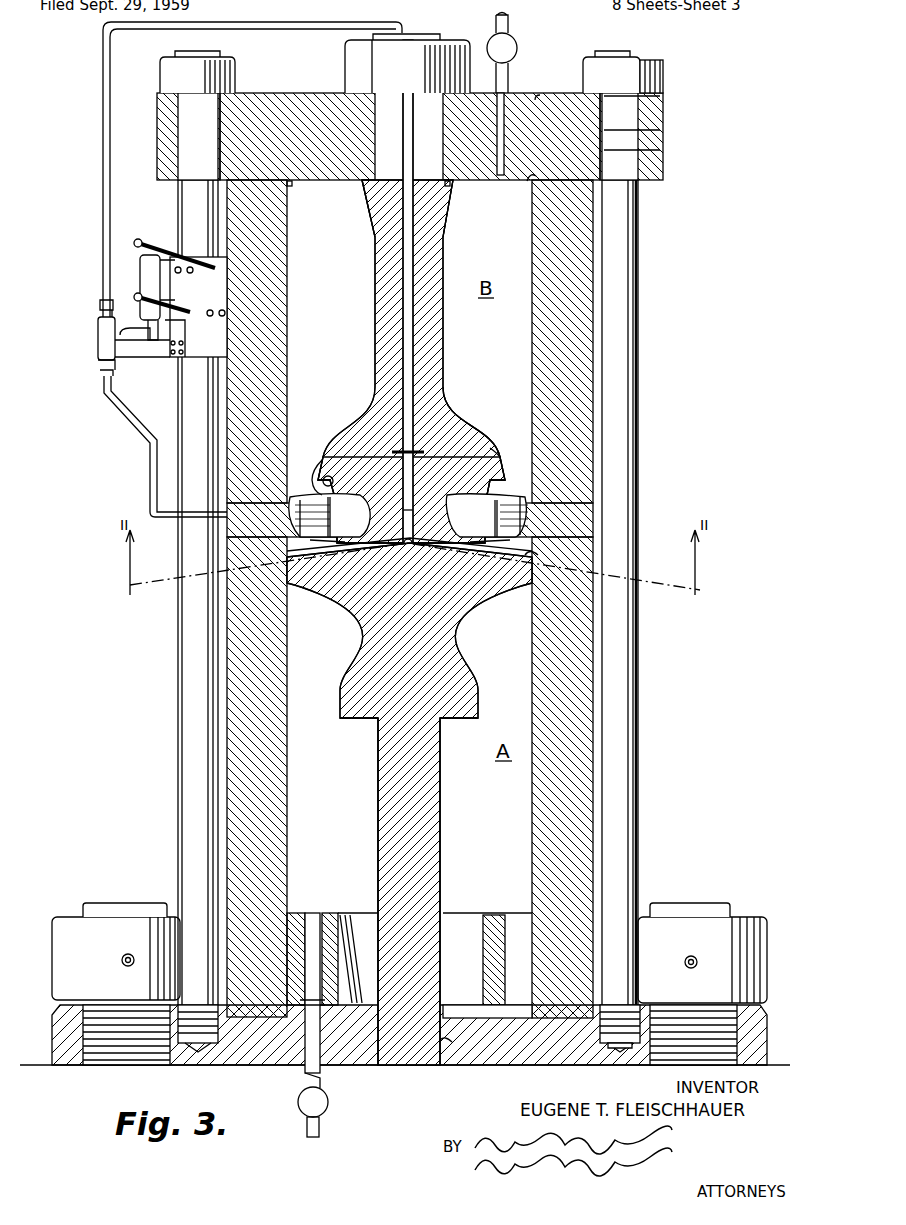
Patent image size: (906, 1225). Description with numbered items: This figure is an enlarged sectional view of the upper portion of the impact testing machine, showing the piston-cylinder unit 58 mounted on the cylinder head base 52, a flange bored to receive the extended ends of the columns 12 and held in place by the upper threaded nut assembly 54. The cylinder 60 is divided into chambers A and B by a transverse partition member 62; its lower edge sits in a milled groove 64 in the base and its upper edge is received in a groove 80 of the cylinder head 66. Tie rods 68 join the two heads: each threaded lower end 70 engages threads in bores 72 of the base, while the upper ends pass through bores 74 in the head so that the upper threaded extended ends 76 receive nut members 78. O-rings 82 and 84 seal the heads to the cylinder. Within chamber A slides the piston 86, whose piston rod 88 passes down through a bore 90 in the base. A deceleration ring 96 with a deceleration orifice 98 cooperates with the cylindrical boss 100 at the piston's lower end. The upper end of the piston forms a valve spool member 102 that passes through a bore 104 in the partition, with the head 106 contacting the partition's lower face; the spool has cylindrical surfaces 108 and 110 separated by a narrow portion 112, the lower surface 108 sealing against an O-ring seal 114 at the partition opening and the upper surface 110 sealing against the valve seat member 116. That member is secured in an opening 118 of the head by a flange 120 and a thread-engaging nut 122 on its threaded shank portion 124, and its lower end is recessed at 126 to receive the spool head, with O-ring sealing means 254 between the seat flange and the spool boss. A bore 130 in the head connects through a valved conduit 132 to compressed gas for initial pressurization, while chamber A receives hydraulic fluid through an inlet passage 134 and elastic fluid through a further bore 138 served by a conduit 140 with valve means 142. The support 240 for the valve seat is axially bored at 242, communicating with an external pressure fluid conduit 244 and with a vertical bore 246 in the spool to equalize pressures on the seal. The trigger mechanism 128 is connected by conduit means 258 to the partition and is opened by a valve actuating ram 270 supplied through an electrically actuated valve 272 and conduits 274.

The columns 12 is at (140, 905).
The cylinder head base 52 is at (762, 1025).
The upper threaded nut assembly 54 is at (58, 930).
The piston-cylinder unit 58 is at (674, 253).
The cylinder 60 is at (230, 779).
The transverse partition member 62 is at (600, 520).
The milled groove 64 is at (574, 1020).
The cylinder head 66 is at (290, 102).
The tie rods 68 is at (188, 200).
The threaded lower end 70 is at (625, 1045).
The bores 72 is at (617, 1050).
The bores 74 is at (650, 175).
The upper threaded extended ends 76 is at (178, 55).
The nut members 78 is at (655, 68).
The groove 80 is at (528, 182).
The O-ring 82 is at (293, 183).
The O-ring 84 is at (527, 1020).
The piston 86 is at (492, 624).
The piston rod 88 is at (376, 755).
The bore 90 is at (450, 1046).
The deceleration ring 96 is at (300, 915).
The deceleration orifice 98 is at (360, 925).
The cylindrical boss 100 is at (472, 718).
The valve spool member 102 is at (370, 470).
The bore 104 is at (498, 498).
The head 106 is at (535, 558).
The cylindrical surface 108 is at (320, 490).
The cylindrical surface 110 is at (318, 475).
The narrow portion 112 is at (375, 552).
The O-ring seal 114 is at (470, 552).
The valve seat member 116 is at (466, 410).
The opening 118 is at (368, 127).
The flange 120 is at (452, 185).
The thread-engaging nut 122 is at (463, 46).
The threaded shank portion 124 is at (446, 40).
The recess 126 is at (482, 452).
The trigger mechanism 128 is at (84, 304).
The bore 130 is at (502, 134).
The valved conduit 132 is at (522, 40).
The inlet passage 134 is at (515, 1040).
The bore 138 is at (305, 1030).
The conduit 140 is at (306, 1078).
The valve means 142 is at (326, 1097).
The support 240 is at (377, 305).
The bore 242 is at (378, 245).
The pressure fluid conduit 244 is at (103, 60).
The vertical bore 246 is at (412, 512).
The O-ring sealing means 254 is at (328, 455).
The conduit means 258 is at (104, 393).
The valve actuating ram 270 is at (147, 270).
The electrically actuated valve 272 is at (210, 297).
The conduits 274 is at (160, 258).